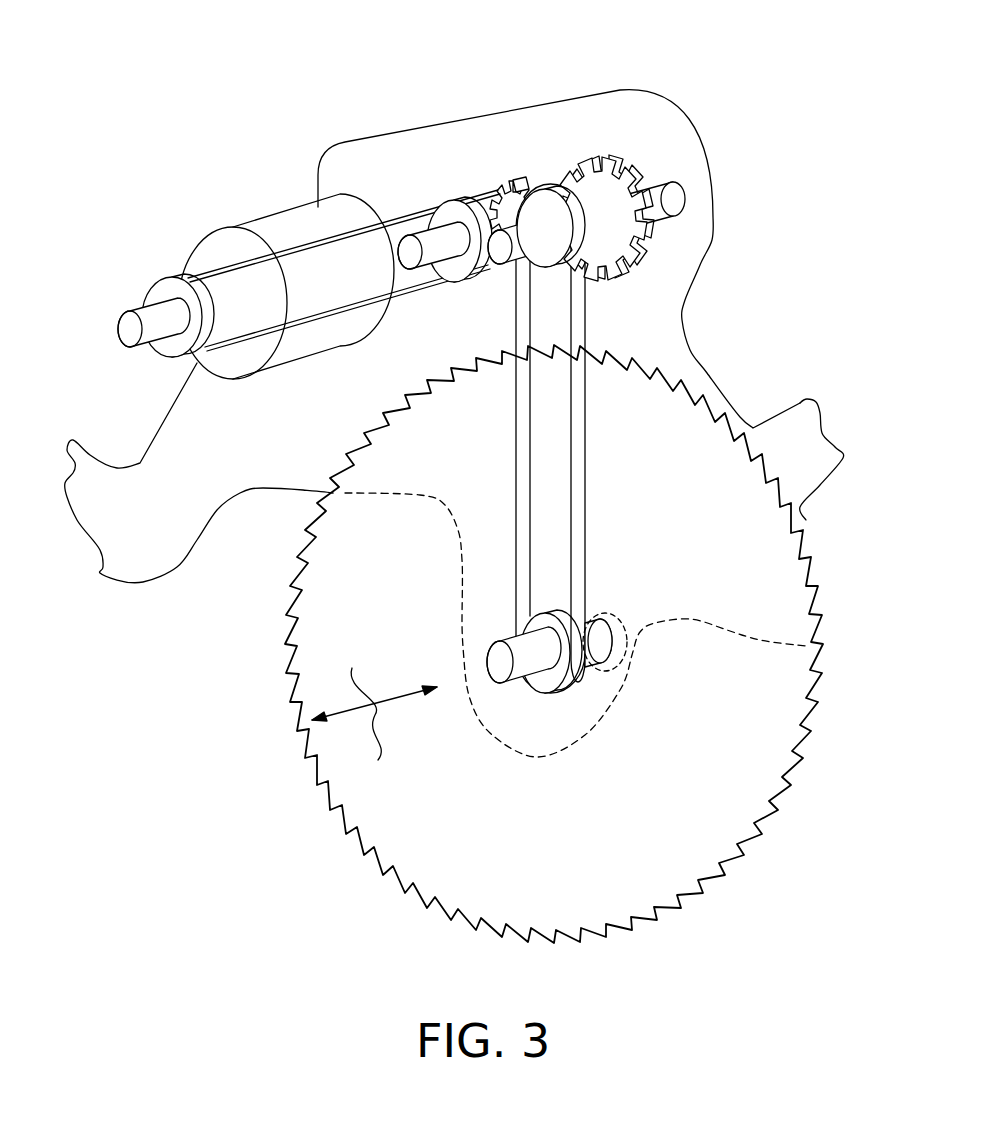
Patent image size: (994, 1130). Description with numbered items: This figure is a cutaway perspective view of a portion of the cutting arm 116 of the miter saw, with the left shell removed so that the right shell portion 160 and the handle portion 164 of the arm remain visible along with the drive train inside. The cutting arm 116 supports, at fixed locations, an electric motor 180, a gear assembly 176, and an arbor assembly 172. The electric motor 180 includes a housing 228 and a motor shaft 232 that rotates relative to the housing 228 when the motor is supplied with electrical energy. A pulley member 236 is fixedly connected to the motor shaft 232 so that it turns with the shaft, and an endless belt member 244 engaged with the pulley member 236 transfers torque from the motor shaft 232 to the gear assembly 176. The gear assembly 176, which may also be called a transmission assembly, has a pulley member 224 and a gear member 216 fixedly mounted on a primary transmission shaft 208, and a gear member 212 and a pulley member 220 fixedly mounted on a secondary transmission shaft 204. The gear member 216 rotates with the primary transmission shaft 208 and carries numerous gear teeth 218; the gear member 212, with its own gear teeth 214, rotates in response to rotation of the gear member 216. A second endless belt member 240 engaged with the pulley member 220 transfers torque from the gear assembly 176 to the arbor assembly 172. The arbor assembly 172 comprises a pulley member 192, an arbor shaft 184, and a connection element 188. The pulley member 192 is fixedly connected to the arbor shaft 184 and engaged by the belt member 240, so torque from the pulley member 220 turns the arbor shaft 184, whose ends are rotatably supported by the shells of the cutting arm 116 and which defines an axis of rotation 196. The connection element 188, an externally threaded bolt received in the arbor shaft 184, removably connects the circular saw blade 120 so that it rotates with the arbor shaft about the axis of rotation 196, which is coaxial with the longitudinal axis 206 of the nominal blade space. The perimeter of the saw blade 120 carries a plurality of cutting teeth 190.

The cutting arm 116 is at (125, 465).
The saw blade 120 is at (802, 755).
The right shell portion 160 is at (380, 134).
The handle portion 164 is at (805, 430).
The arbor assembly 172 is at (513, 775).
The gear assembly 176 is at (722, 114).
The electric motor 180 is at (224, 190).
The arbor shaft 184 is at (510, 645).
The connection element 188 is at (606, 612).
The cutting teeth 190 is at (725, 885).
The pulley member 192 is at (545, 682).
The axis of rotation 196 is at (374, 681).
The secondary transmission shaft 204 is at (665, 205).
The longitudinal axis 206 is at (374, 728).
The primary transmission shaft 208 is at (405, 256).
The gear member 212 is at (603, 268).
The gear teeth 214 is at (634, 168).
The gear member 216 is at (487, 200).
The gear teeth 218 is at (523, 178).
The pulley member 220 is at (548, 262).
The pulley member 224 is at (460, 230).
The housing 228 is at (200, 255).
The motor shaft 232 is at (128, 332).
The pulley member 236 is at (158, 298).
The belt member 240 is at (583, 500).
The belt member 244 is at (400, 300).